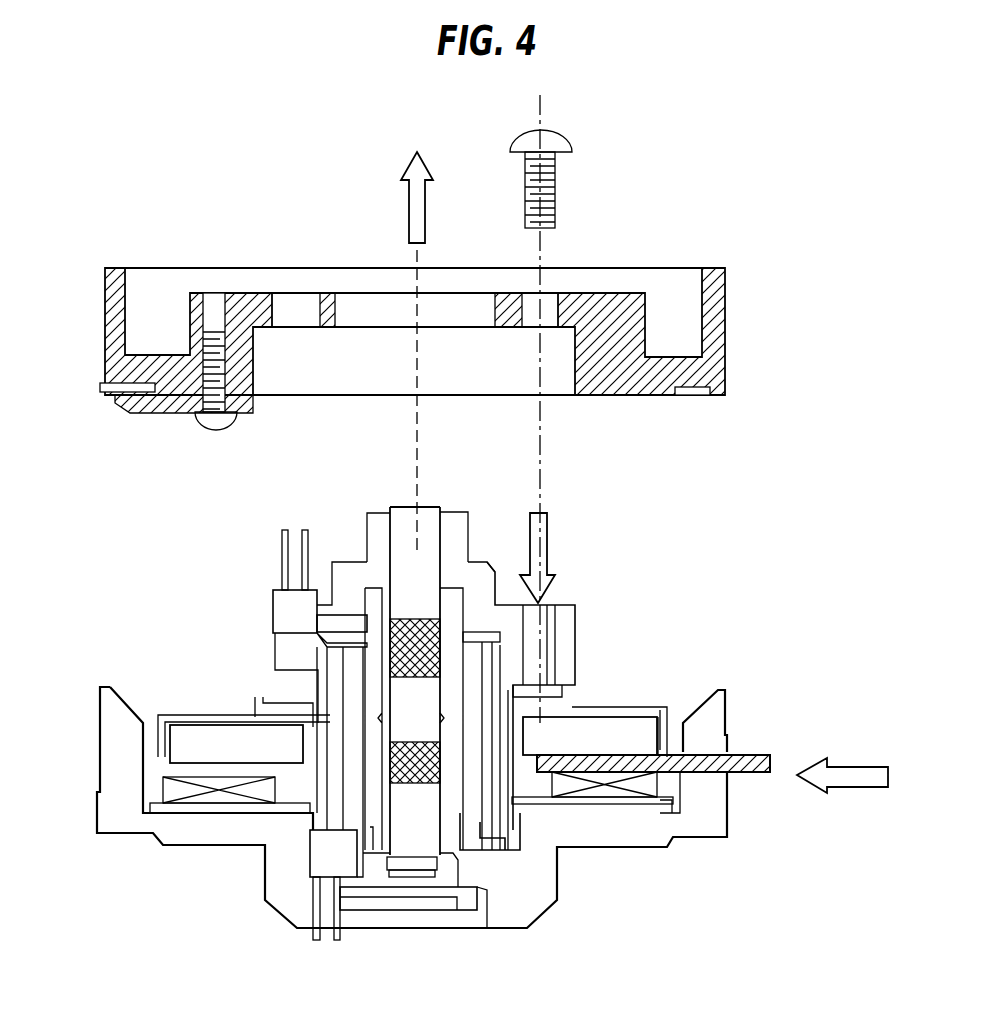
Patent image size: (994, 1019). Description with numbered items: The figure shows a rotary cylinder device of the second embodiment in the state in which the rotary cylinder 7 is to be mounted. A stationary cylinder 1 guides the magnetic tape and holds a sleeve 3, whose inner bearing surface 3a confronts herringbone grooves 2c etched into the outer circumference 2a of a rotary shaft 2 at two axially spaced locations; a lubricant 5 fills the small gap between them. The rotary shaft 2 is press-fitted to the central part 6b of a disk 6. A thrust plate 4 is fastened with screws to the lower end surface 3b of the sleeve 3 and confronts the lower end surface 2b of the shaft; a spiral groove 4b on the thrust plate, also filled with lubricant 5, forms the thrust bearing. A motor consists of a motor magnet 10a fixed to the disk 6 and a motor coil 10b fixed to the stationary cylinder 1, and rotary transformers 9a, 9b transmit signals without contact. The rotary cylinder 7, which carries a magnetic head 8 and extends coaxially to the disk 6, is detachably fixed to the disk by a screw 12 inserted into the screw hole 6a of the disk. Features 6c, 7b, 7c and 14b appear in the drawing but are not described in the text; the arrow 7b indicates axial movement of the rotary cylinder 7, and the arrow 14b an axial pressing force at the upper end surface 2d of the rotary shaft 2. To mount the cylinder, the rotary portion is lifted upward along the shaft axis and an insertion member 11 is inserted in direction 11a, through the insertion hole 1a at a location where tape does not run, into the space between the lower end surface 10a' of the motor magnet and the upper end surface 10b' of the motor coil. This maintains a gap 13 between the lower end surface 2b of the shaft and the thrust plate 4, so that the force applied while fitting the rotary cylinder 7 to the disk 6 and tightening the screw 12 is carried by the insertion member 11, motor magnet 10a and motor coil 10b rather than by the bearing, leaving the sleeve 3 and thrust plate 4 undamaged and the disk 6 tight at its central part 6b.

The stationary cylinder 1 is at (107, 805).
The insertion hole 1a is at (730, 790).
The rotary shaft 2 is at (423, 525).
The outer circumference of the shaft 2a is at (350, 830).
The lower end surface of the shaft 2b is at (373, 843).
The herringbone grooves 2c is at (433, 670).
The upper end surface of the rotary shaft 2d is at (400, 502).
The sleeve 3 is at (320, 827).
The bearing surface 3a is at (413, 617).
The lower end surface of the sleeve 3b is at (455, 915).
The thrust plate 4 is at (440, 905).
The spiral groove 4b is at (423, 890).
The lubricant 5 is at (295, 618).
The disk 6 is at (343, 575).
The screw hole 6a is at (555, 622).
The central part of the disk 6b is at (382, 537).
The holder shoulder 6c is at (498, 578).
The rotary cylinder 7 is at (110, 300).
The cover removal direction 7b is at (330, 965).
The cover recess 7c is at (495, 310).
The magnetic head 8 is at (100, 387).
The rotary transformer 9a is at (337, 662).
The rotary transformer 9b is at (307, 817).
The motor magnet 10a is at (590, 714).
The lower end surface of the motor magnet 10a' is at (634, 715).
The motor coil 10b is at (592, 835).
The upper end surface of the motor coil 10b' is at (665, 834).
The insertion member 11 is at (740, 775).
The insertion direction 11a is at (850, 789).
The screw 12 is at (556, 176).
The gap 13 is at (480, 895).
The pressing direction 14b is at (556, 546).